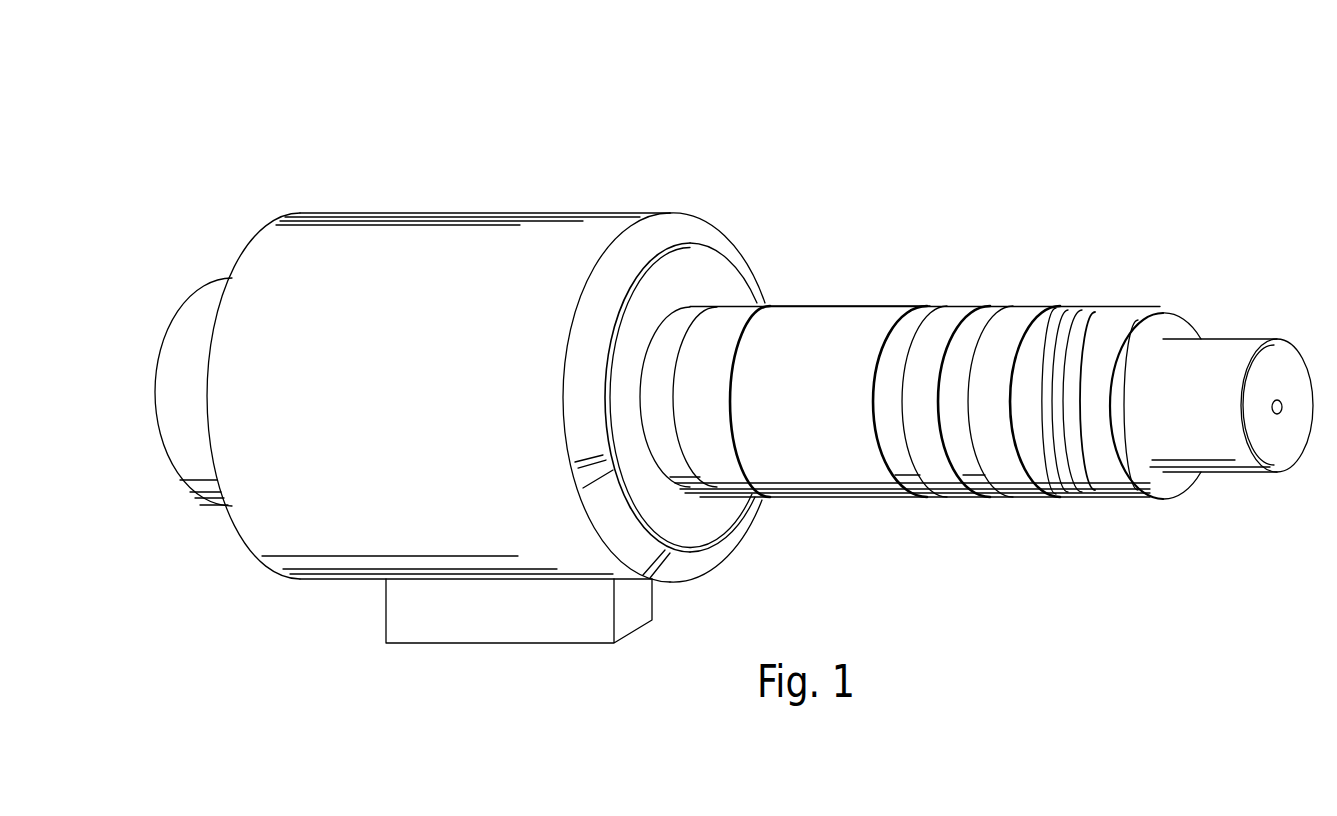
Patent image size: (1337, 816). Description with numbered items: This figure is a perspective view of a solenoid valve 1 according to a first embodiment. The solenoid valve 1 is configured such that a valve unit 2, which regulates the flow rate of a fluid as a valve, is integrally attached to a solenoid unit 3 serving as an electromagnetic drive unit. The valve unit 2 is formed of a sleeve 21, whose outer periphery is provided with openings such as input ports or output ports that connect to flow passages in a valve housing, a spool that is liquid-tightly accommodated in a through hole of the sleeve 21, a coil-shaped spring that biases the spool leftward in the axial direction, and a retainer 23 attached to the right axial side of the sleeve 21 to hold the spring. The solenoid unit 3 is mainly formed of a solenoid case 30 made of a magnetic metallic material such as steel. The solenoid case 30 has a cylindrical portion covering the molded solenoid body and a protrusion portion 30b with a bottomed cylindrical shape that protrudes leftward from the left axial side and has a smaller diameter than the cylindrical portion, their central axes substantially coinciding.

The solenoid valve 1 is at (1188, 540).
The valve unit 2 is at (978, 260).
The solenoid unit 3 is at (360, 170).
The sleeve 21 is at (843, 322).
The retainer 23 is at (1204, 336).
The solenoid case 30 is at (428, 202).
The protrusion portion 30b is at (172, 397).